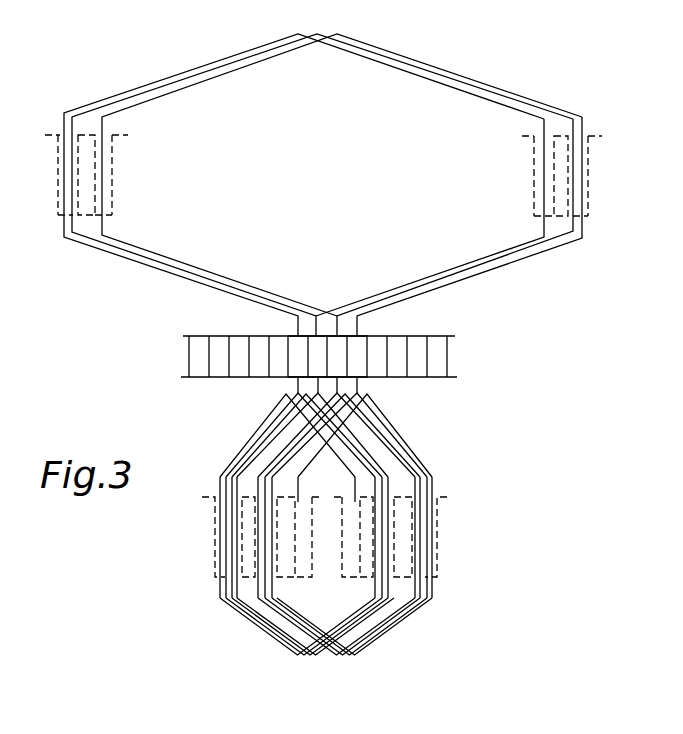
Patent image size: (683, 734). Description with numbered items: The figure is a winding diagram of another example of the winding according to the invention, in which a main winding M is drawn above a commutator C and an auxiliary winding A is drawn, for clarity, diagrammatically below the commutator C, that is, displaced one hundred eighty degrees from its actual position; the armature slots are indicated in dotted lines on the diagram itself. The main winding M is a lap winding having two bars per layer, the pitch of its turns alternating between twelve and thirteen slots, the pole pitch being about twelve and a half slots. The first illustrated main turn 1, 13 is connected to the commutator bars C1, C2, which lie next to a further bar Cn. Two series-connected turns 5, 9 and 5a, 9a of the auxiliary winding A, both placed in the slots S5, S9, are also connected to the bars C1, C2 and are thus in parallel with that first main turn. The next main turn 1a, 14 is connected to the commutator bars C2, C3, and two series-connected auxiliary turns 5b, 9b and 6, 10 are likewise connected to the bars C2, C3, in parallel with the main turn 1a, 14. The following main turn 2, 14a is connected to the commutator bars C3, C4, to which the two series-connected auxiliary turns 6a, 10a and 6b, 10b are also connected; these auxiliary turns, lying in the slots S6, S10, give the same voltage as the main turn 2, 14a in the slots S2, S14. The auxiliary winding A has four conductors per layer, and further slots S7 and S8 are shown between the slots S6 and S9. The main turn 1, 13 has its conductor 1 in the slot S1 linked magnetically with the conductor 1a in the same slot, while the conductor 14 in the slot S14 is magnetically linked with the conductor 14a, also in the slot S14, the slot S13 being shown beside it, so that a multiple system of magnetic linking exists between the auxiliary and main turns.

The conductor of first main turn 1 is at (62, 230).
The conductor of next main turn 1a is at (73, 236).
The conductor of main turn 2 is at (102, 224).
The conductor of first main turn 13 is at (543, 228).
The conductor of next main turn 14 is at (572, 240).
The conductor of main turn 14a is at (584, 238).
The armature slot S1 is at (60, 132).
The armature slot S2 is at (112, 137).
The armature slot S13 is at (536, 140).
The armature slot S14 is at (585, 137).
The main winding M is at (325, 185).
The commutator C is at (325, 329).
The commutator bar Cn is at (277, 349).
The commutator bar C1 is at (298, 350).
The commutator bar C2 is at (318, 345).
The commutator bar C3 is at (338, 345).
The commutator bar C4 is at (360, 350).
The auxiliary winding A is at (329, 517).
The armature slot S5 is at (211, 497).
The armature slot S6 is at (255, 497).
The armature slot S7 is at (303, 502).
The armature slot S8 is at (352, 500).
The armature slot S9 is at (395, 497).
The armature slot S10 is at (437, 498).
The auxiliary turn conductor 5 is at (221, 552).
The auxiliary turn conductor 5a is at (232, 578).
The auxiliary turn conductor 5b is at (220, 598).
The auxiliary turn conductor 6 is at (256, 612).
The auxiliary turn conductor 6a is at (263, 600).
The auxiliary turn conductor 6b is at (268, 588).
The auxiliary turn conductor 9 is at (375, 592).
The auxiliary turn conductor 9a is at (395, 618).
The auxiliary turn conductor 9b is at (418, 605).
The auxiliary turn conductor 10 is at (418, 552).
The auxiliary turn conductor 10a is at (424, 566).
The auxiliary turn conductor 10b is at (428, 590).